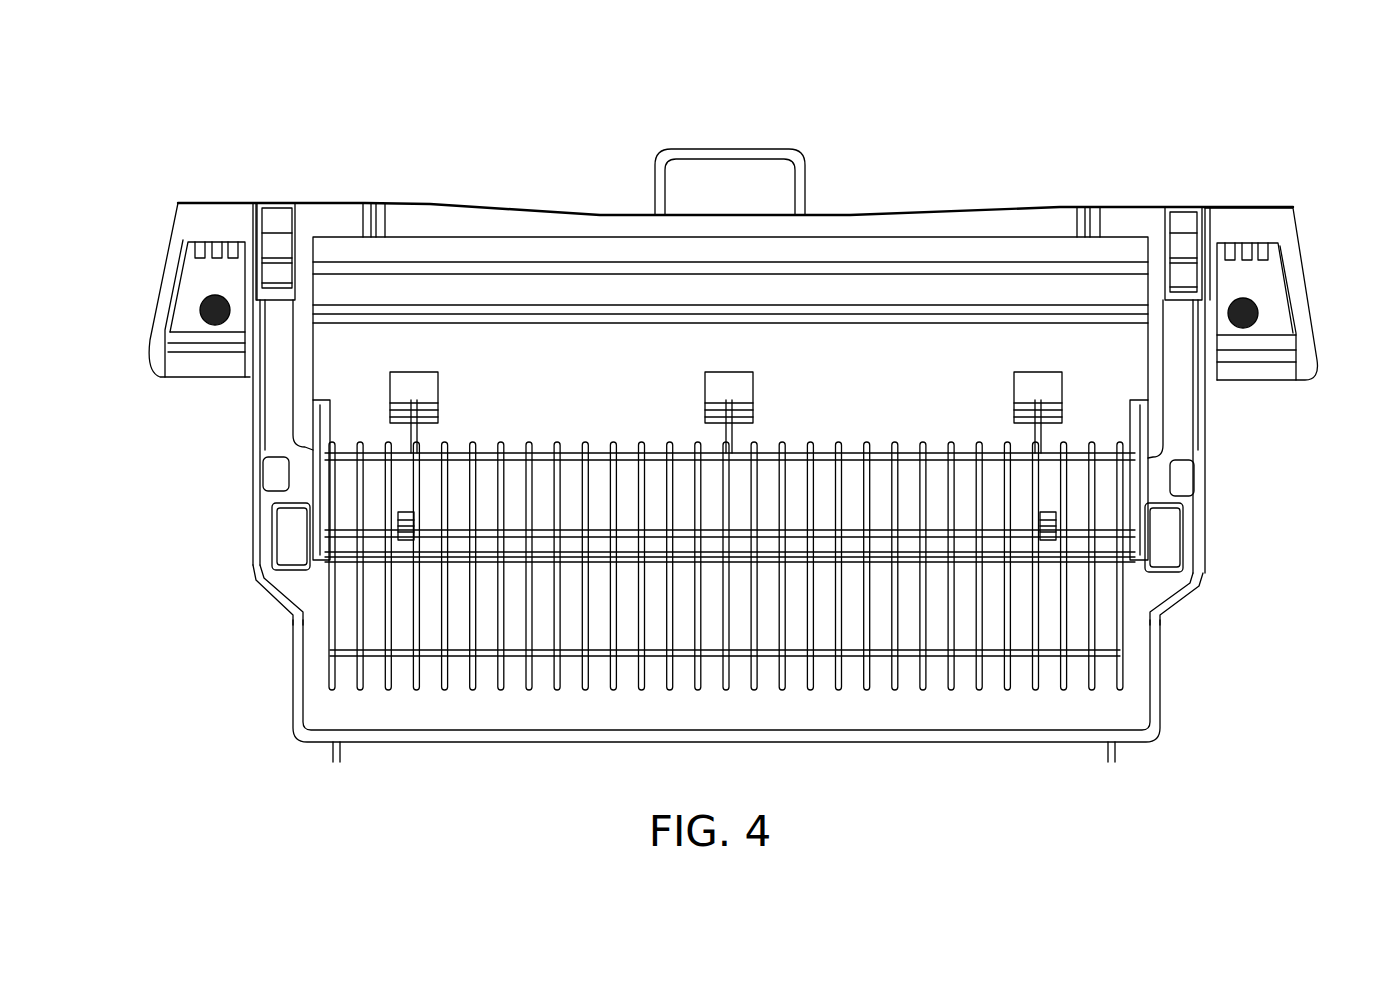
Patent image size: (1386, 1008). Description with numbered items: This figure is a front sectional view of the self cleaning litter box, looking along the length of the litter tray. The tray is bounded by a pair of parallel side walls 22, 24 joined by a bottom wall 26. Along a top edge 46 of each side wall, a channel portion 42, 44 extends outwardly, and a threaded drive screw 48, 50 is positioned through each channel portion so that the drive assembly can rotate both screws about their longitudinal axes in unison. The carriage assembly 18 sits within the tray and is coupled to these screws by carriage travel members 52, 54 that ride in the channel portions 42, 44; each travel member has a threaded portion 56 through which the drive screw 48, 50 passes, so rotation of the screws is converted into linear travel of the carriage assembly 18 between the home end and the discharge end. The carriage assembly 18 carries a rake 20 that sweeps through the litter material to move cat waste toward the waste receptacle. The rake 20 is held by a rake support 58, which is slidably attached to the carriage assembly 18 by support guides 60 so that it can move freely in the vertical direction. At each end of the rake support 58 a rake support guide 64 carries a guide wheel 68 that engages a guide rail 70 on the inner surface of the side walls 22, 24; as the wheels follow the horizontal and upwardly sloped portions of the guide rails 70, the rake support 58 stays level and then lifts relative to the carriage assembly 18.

The carriage assembly 18 is at (900, 205).
The rake 20 is at (1090, 636).
The side wall 22 is at (250, 445).
The side wall 24 is at (1210, 440).
The bottom wall 26 is at (505, 744).
The channel portion 42 is at (180, 204).
The channel portion 44 is at (1292, 213).
The top edge 46 is at (259, 205).
The threaded drive screw 48 is at (195, 316).
The threaded drive screw 50 is at (1278, 322).
The carriage travel member 52 is at (205, 353).
The carriage travel member 54 is at (1250, 365).
The threaded portion 56 is at (205, 308).
The rake support 58 is at (480, 345).
The support guide 60 is at (377, 205).
The rake support guide 64 is at (262, 490).
The guide wheel 68 is at (285, 546).
The guide rail 70 is at (268, 586).